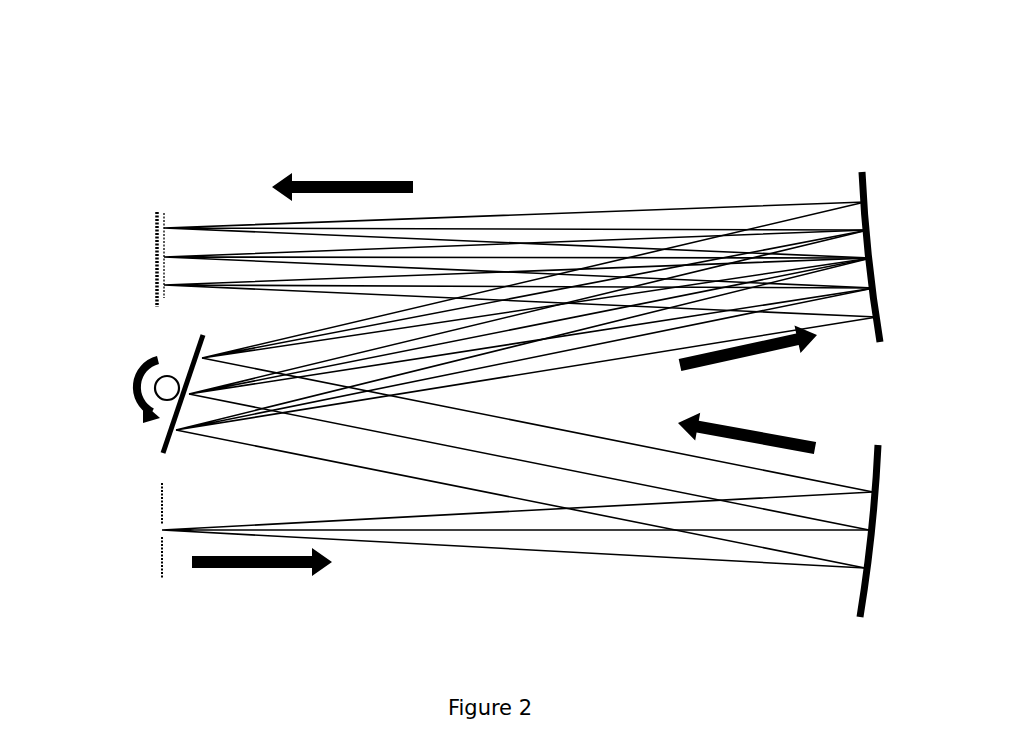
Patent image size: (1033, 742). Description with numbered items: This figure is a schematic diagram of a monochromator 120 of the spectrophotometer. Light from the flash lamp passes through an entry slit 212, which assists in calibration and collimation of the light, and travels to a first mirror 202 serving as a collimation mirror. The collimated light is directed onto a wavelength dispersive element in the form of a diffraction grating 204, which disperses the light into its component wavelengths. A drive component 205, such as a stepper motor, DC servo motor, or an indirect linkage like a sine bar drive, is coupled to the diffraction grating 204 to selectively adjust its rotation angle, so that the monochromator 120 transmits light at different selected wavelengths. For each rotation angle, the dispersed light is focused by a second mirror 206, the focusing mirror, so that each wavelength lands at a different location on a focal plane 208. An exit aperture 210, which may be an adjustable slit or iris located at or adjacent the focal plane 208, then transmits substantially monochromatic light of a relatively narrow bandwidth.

The monochromator 120 is at (91, 96).
The first mirror 202 is at (847, 583).
The diffraction grating 204 is at (157, 471).
The drive component 205 is at (164, 416).
The second mirror 206 is at (851, 174).
The focal plane 208 is at (182, 218).
The exit aperture 210 is at (144, 264).
The entry slit 212 is at (146, 537).